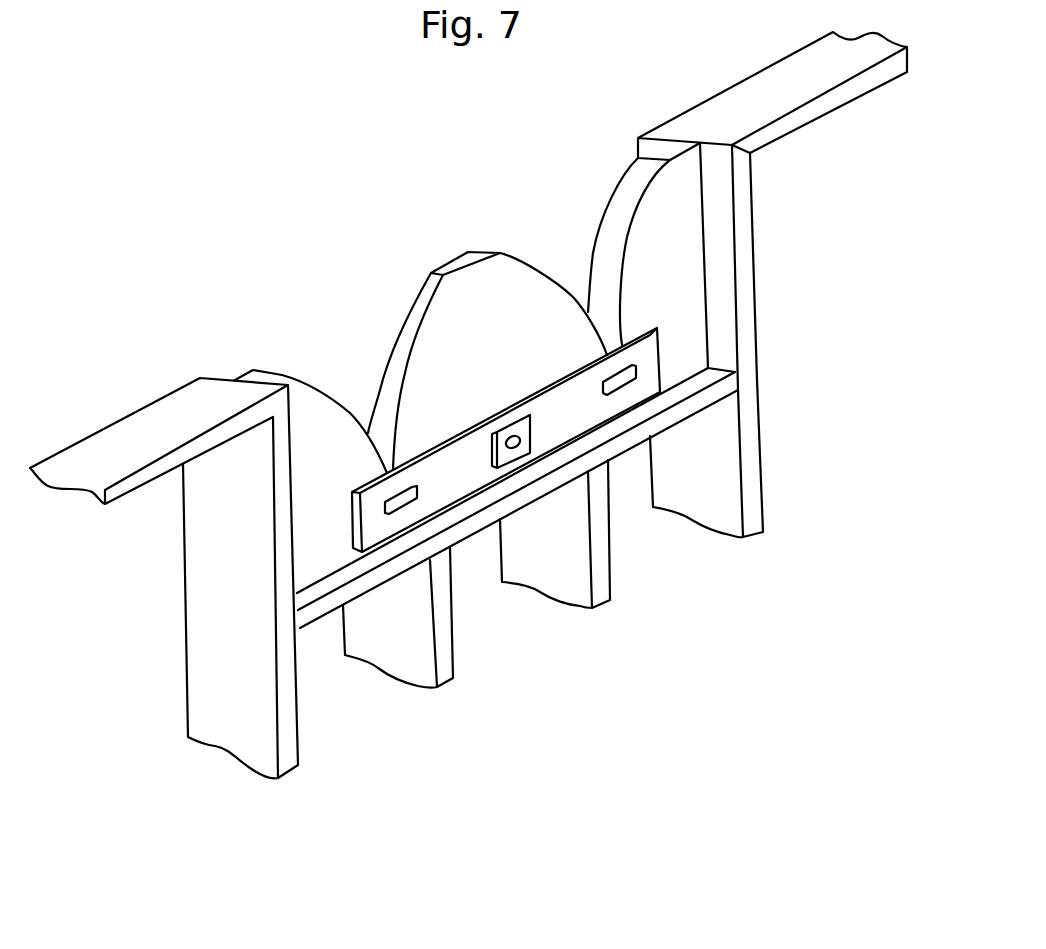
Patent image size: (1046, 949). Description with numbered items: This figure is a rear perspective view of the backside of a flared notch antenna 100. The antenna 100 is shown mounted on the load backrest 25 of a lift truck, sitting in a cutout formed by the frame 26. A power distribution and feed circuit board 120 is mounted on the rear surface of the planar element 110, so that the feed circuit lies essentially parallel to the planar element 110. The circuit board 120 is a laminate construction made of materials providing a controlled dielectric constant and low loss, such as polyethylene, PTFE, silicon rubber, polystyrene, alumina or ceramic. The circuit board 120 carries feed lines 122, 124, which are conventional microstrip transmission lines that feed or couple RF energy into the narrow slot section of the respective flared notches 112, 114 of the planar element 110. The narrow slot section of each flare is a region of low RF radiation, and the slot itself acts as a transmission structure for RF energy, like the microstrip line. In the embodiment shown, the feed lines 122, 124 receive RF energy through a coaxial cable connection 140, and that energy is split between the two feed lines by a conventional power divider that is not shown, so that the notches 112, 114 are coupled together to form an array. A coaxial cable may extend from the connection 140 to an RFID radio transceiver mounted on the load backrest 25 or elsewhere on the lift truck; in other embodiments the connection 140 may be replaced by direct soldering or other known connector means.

The load backrest 25 is at (468, 405).
The frame 26 is at (753, 248).
The antenna 100 is at (427, 358).
The planar element 110 is at (412, 288).
The flared notch 112 is at (360, 406).
The flared notch 114 is at (575, 284).
The power distribution and feed circuit board 120 is at (524, 443).
The feed line 122 is at (452, 472).
The feed line 124 is at (603, 393).
The coaxial cable connection 140 is at (518, 412).